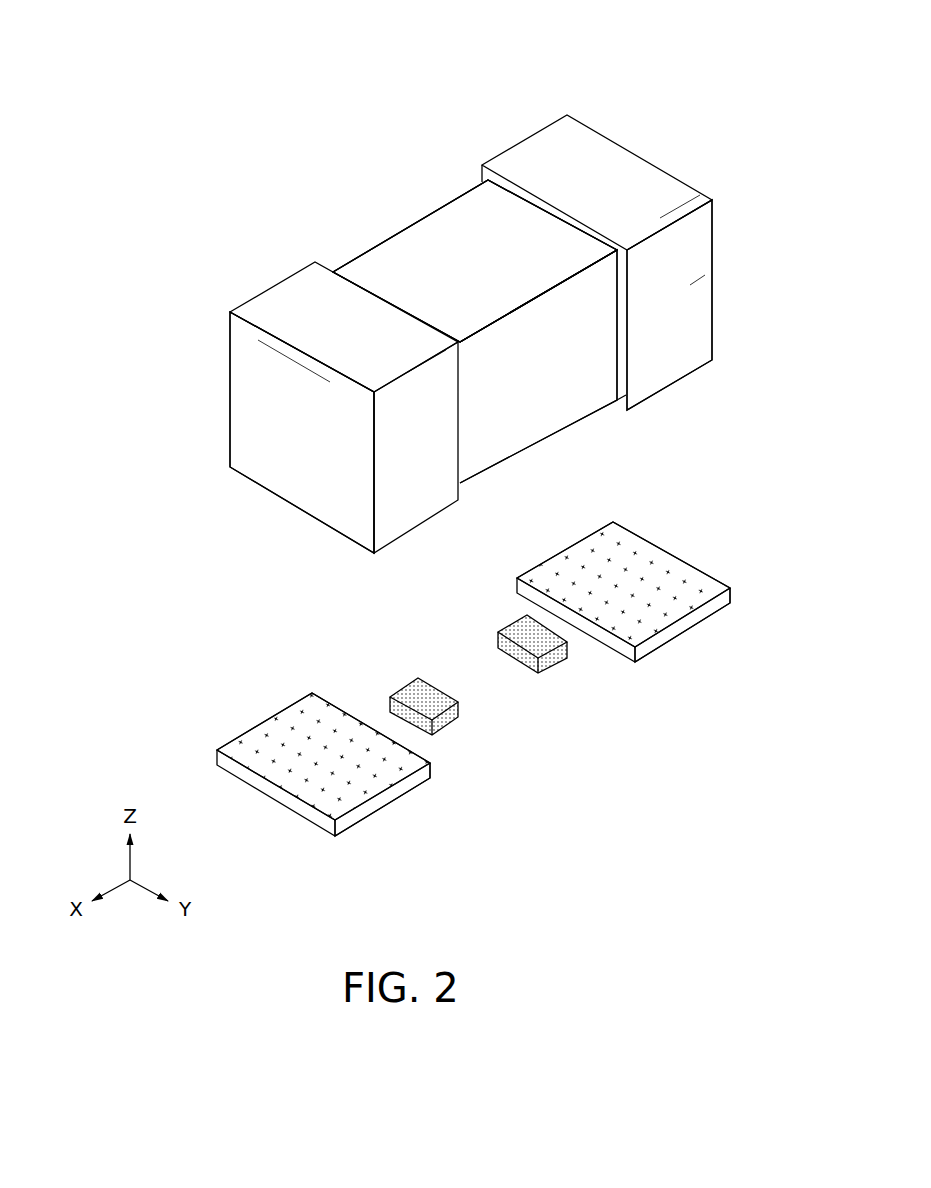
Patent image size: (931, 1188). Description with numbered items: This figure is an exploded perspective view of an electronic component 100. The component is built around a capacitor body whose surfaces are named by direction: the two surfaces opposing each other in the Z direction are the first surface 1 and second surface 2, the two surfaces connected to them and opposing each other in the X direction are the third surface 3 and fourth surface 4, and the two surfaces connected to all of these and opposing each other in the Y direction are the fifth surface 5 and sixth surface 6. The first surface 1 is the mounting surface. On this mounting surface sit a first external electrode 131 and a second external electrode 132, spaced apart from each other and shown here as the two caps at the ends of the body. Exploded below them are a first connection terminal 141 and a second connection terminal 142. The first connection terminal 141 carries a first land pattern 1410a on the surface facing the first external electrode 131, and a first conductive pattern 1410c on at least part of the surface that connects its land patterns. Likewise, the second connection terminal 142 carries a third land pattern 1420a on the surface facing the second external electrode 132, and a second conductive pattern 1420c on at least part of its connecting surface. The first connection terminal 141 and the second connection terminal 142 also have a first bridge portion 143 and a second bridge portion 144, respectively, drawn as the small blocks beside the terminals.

The electronic component 100 is at (324, 59).
The first surface 1 is at (552, 395).
The second surface 2 is at (454, 226).
The third surface 3 is at (285, 420).
The fourth surface 4 is at (688, 272).
The fifth surface 5 is at (578, 350).
The sixth surface 6 is at (413, 270).
The first external electrode 131 is at (290, 305).
The second external electrode 132 is at (543, 157).
The first connection terminal 141 is at (279, 710).
The second connection terminal 142 is at (566, 544).
The first land pattern 1410a is at (290, 764).
The first conductive pattern 1410c is at (372, 801).
The third land pattern 1420a is at (656, 572).
The second conductive pattern 1420c is at (690, 622).
The first bridge portion 143 is at (458, 717).
The second bridge portion 144 is at (565, 657).